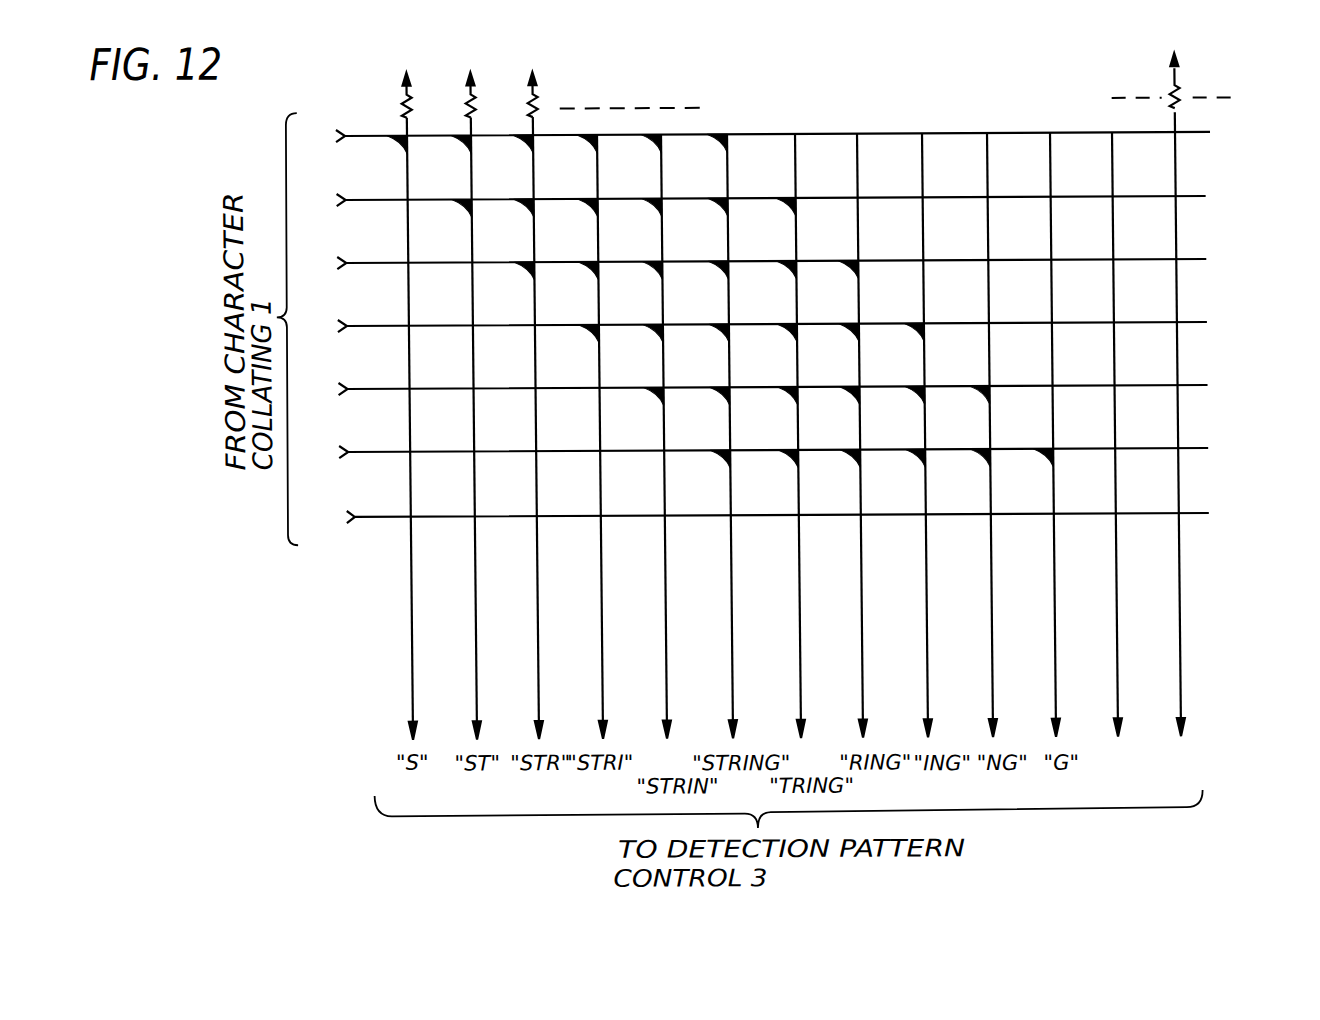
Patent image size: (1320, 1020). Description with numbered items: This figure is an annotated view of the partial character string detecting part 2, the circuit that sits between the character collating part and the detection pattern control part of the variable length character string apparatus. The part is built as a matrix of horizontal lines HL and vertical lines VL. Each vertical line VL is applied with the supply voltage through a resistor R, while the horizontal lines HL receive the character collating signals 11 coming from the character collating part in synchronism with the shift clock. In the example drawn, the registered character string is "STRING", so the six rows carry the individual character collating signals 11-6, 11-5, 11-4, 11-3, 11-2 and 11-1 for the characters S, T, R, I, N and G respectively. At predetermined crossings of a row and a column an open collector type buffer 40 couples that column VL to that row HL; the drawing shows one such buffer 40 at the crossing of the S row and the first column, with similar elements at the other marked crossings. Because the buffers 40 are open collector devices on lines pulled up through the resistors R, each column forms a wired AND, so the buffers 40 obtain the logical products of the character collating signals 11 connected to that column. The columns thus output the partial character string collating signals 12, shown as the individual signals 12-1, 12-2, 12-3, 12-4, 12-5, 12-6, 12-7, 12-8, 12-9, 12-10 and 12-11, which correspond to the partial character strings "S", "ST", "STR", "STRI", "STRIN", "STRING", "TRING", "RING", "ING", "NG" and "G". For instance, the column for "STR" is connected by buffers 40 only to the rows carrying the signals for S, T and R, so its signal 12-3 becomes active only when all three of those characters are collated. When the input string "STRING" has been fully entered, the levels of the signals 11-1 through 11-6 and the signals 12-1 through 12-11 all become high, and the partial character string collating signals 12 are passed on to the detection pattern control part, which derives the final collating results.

The partial character string detecting part 2 is at (777, 64).
The character collating signals 11 is at (320, 113).
The character collating signal 11-1 is at (758, 446).
The character collating signal 11-2 is at (756, 383).
The character collating signal 11-3 is at (759, 320).
The character collating signal 11-4 is at (756, 257).
The character collating signal 11-5 is at (756, 194).
The character collating signal 11-6 is at (757, 130).
The partial character string collating signals 12 is at (406, 653).
The partial character string collating signal 12-1 is at (390, 429).
The partial character string collating signal 12-2 is at (454, 428).
The partial character string collating signal 12-3 is at (516, 428).
The partial character string collating signal 12-4 is at (580, 437).
The partial character string collating signal 12-5 is at (644, 437).
The partial character string collating signal 12-6 is at (710, 436).
The partial character string collating signal 12-7 is at (778, 436).
The partial character string collating signal 12-8 is at (840, 436).
The partial character string collating signal 12-9 is at (905, 435).
The partial character string collating signal 12-10 is at (965, 435).
The partial character string collating signal 12-11 is at (1028, 435).
The open collector type buffer 40 is at (403, 150).
The horizontal lines HL is at (1188, 389).
The vertical lines VL is at (595, 613).
The resistor R is at (413, 112).